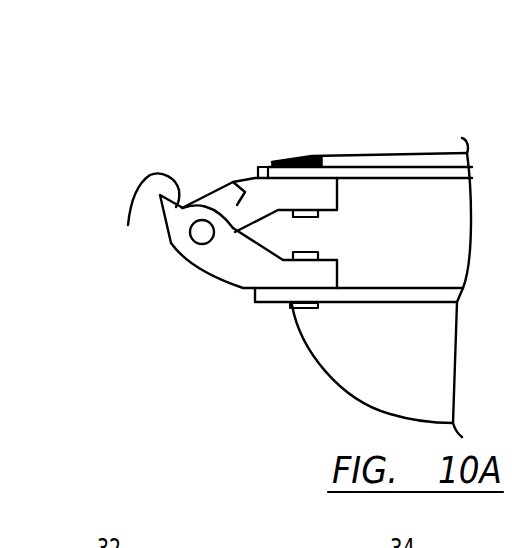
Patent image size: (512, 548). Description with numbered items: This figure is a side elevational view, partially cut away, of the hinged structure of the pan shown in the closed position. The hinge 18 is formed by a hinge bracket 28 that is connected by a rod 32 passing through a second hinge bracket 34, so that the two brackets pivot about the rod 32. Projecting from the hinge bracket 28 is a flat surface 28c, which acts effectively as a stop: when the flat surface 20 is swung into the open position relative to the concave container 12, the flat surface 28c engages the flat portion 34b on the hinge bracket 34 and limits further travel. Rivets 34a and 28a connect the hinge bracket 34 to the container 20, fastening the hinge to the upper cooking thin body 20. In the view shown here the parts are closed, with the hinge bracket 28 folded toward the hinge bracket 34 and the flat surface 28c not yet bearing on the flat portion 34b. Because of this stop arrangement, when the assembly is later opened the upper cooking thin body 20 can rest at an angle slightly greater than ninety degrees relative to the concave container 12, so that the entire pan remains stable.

The concave container 12 is at (395, 387).
The hinge 18 is at (193, 140).
The flat surface 20 is at (412, 150).
The hinge bracket 28 is at (237, 273).
The rivet 28a is at (308, 307).
The flat surface 28c is at (144, 213).
The rod 32 is at (203, 232).
The hinge bracket 34 is at (265, 188).
The rivet 34a is at (313, 153).
The flat portion 34b is at (231, 180).